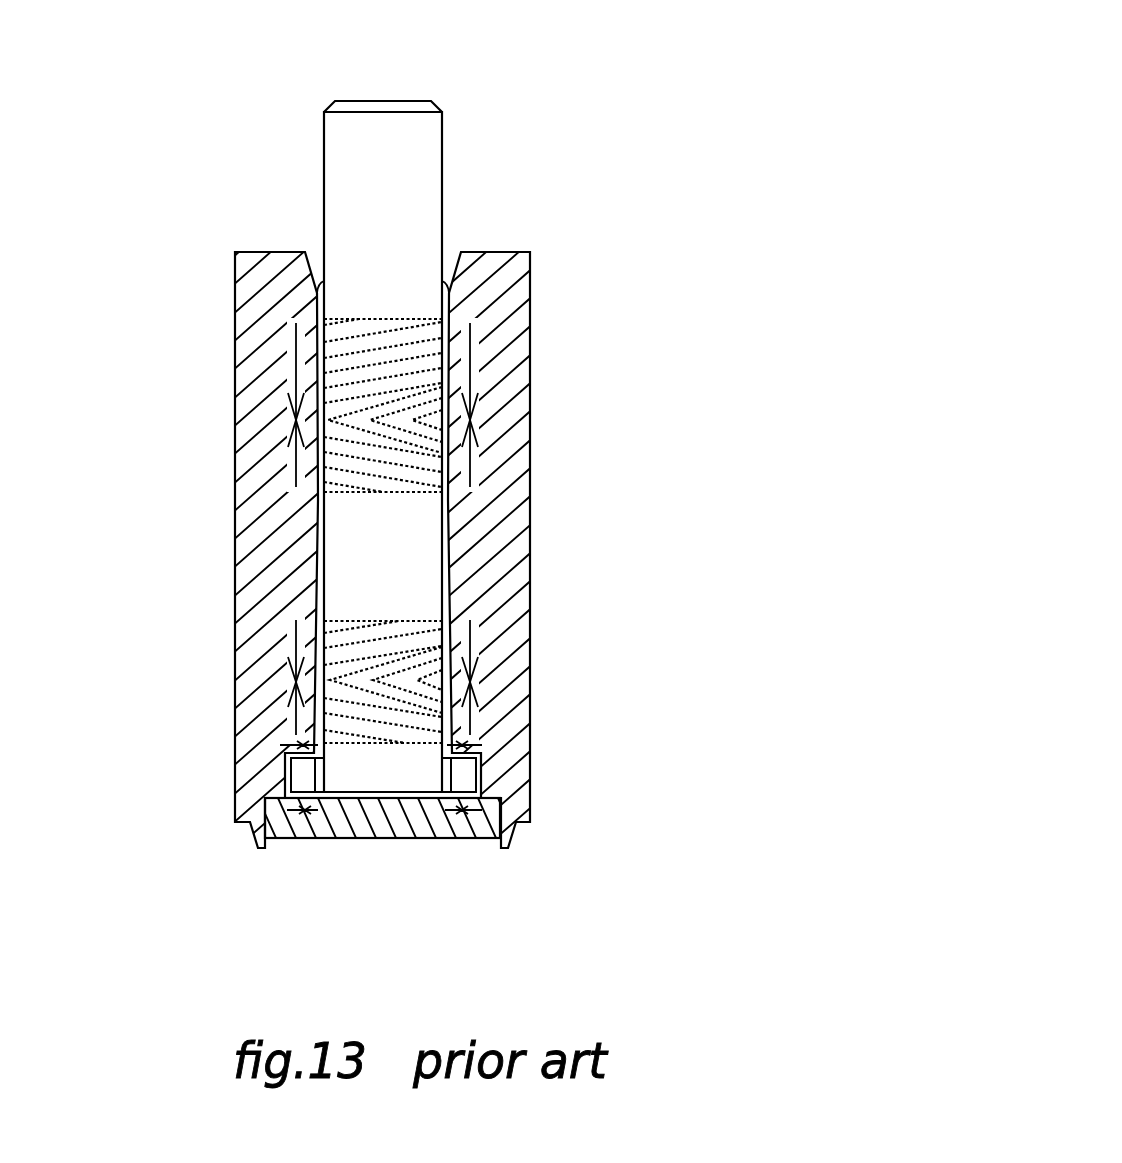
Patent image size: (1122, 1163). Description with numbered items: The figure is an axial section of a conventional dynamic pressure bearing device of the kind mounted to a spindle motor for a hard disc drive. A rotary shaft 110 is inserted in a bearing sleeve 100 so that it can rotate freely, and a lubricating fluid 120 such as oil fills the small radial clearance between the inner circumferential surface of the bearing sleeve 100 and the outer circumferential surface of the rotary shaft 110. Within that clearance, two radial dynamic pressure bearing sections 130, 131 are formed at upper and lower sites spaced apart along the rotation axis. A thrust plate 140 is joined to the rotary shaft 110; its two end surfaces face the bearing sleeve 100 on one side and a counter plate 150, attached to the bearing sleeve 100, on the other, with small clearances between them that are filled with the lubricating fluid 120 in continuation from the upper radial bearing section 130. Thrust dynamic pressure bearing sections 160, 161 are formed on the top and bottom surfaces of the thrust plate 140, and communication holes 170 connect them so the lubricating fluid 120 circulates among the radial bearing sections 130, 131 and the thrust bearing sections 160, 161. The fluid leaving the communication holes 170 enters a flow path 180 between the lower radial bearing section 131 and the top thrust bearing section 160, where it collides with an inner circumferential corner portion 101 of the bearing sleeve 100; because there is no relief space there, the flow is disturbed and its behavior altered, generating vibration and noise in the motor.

The bearing sleeve 100 is at (533, 267).
The inner circumferential corner portion 101 is at (447, 758).
The rotary shaft 110 is at (425, 148).
The lubricating fluid 120 is at (571, 406).
The radial dynamic pressure bearing section 130 is at (390, 320).
The radial dynamic pressure bearing section 131 is at (425, 620).
The thrust plate 140 is at (300, 778).
The counter plate 150 is at (287, 833).
The thrust dynamic pressure bearing section 160 is at (452, 761).
The thrust dynamic pressure bearing section 161 is at (470, 791).
The communication holes 170 is at (322, 783).
The flow path 180 is at (325, 758).